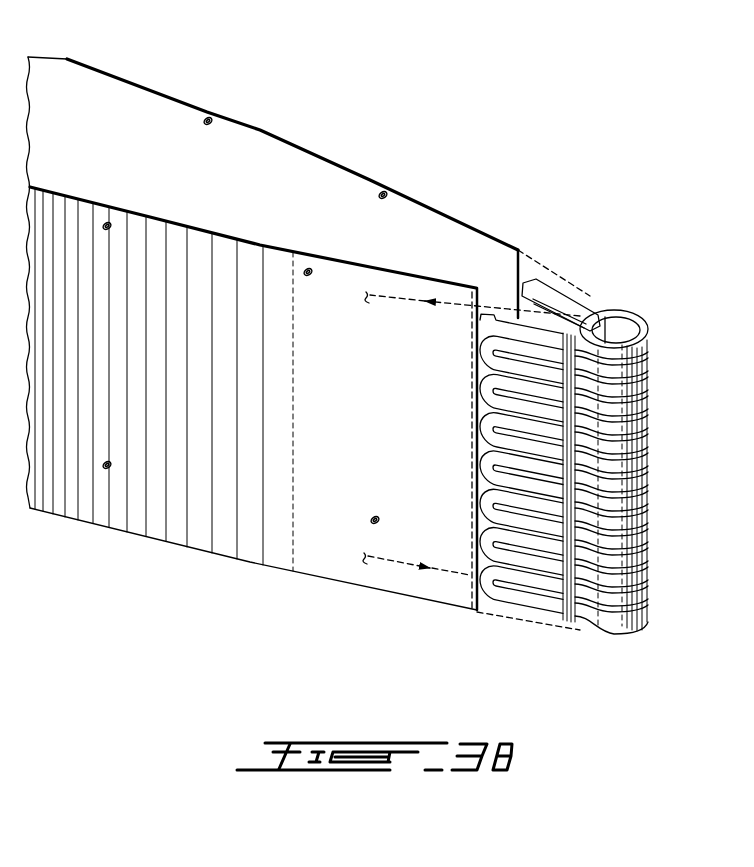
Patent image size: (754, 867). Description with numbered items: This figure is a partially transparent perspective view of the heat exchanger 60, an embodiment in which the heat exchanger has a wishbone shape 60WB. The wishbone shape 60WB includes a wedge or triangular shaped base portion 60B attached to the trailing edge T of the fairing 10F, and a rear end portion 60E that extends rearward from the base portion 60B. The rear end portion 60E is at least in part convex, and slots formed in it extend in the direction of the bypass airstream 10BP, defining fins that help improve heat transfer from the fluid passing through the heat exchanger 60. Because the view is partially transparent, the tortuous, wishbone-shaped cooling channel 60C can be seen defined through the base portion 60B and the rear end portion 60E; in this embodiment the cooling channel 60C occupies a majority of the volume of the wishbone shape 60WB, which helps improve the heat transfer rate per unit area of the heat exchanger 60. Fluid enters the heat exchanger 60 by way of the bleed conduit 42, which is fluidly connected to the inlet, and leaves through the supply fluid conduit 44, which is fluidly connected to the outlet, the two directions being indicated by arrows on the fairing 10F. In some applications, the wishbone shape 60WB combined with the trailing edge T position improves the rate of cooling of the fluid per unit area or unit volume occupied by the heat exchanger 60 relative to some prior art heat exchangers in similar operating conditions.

The bypass airstream 10BP is at (220, 410).
The fairing 10F is at (153, 392).
The trailing edge T is at (418, 471).
The bleed conduit 42 is at (440, 572).
The supply fluid conduit 44 is at (402, 296).
The heat exchanger 60 is at (598, 425).
The base portion 60B is at (482, 292).
The wishbone shape 60WB is at (645, 297).
The cooling channel 60C is at (640, 410).
The rear end portion 60E is at (613, 636).